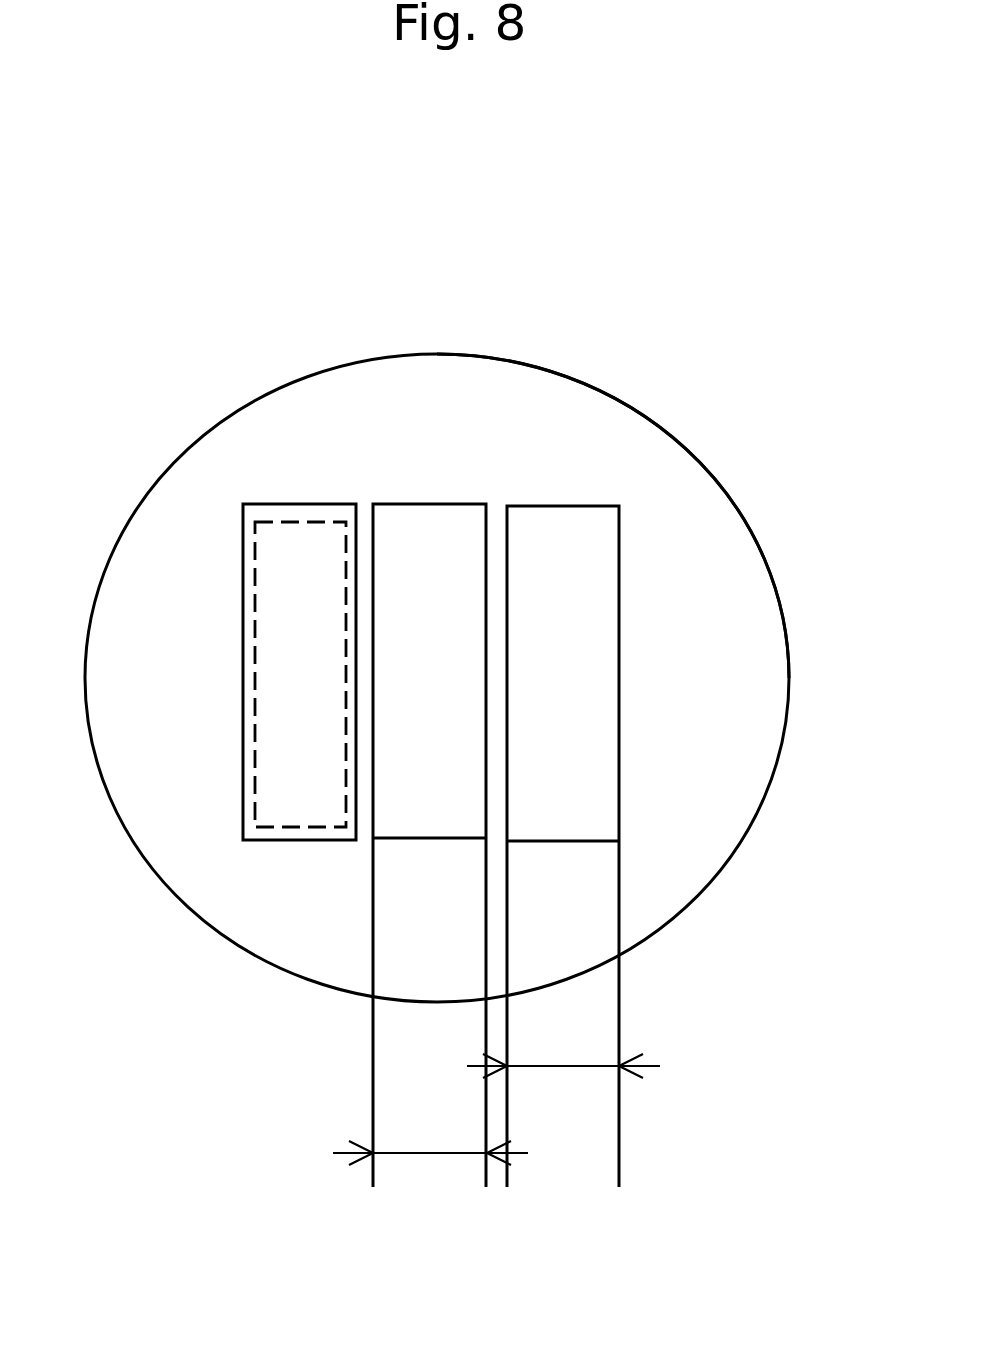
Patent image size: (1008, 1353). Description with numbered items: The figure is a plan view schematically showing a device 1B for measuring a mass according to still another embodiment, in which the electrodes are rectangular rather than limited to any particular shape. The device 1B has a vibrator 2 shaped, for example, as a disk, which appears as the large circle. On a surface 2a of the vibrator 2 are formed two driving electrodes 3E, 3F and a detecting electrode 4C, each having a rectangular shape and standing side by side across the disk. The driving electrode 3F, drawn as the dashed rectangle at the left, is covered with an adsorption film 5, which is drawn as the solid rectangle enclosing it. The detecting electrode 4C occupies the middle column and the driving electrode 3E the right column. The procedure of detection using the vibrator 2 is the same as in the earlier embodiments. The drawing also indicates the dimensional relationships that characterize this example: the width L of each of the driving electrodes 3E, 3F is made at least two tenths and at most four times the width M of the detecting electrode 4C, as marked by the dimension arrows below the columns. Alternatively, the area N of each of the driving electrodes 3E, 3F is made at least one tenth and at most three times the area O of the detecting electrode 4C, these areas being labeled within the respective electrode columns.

The device for measuring a mass 1B is at (760, 485).
The vibrator 2 is at (745, 637).
The surface of the vibrator 2a is at (632, 406).
The driving electrode 3E is at (587, 578).
The driving electrode 3F is at (316, 518).
The detecting electrode 4C is at (437, 520).
The adsorption film 5 is at (242, 587).
The area of the detecting electrode O is at (442, 683).
The area of the driving electrode N is at (576, 683).
The width of the detecting electrode M is at (428, 1153).
The width of the driving electrode L is at (558, 1066).